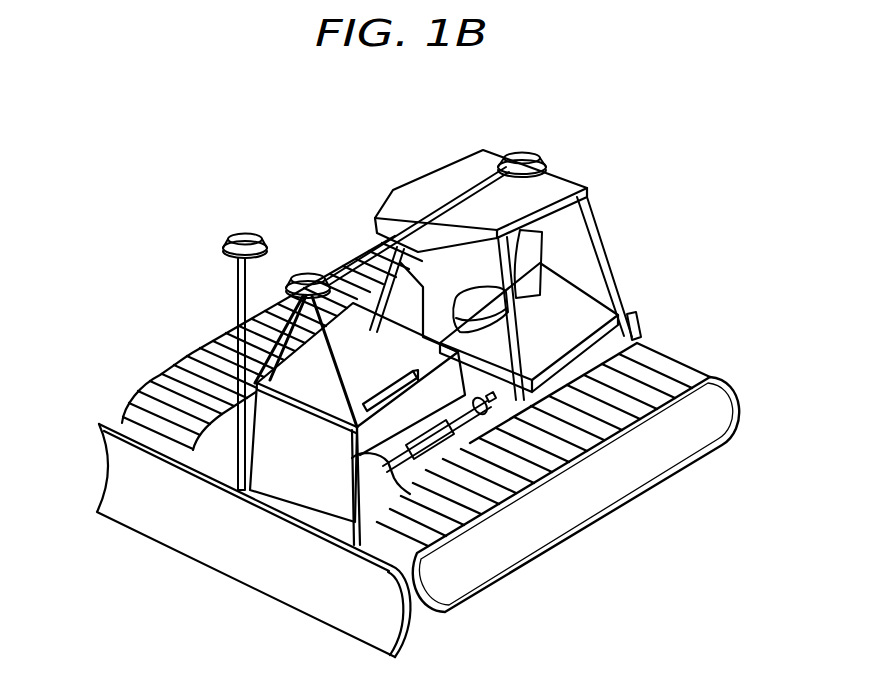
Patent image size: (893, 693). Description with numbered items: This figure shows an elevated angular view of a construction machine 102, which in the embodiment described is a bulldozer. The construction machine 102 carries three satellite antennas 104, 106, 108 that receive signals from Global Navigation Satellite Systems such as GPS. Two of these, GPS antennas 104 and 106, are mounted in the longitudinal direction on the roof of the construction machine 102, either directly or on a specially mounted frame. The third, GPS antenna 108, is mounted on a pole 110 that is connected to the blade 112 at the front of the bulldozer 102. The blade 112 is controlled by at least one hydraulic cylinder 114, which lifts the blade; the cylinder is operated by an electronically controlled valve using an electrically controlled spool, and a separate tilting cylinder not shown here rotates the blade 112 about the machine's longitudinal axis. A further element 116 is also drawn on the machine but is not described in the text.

The construction machine 102 is at (690, 170).
The satellite antenna 104 is at (531, 153).
The satellite antenna 106 is at (311, 272).
The satellite antenna 108 is at (246, 232).
The pole 110 is at (238, 296).
The blade 112 is at (112, 466).
The hydraulic cylinder 114 is at (437, 433).
The sensor bracket 116 is at (638, 325).